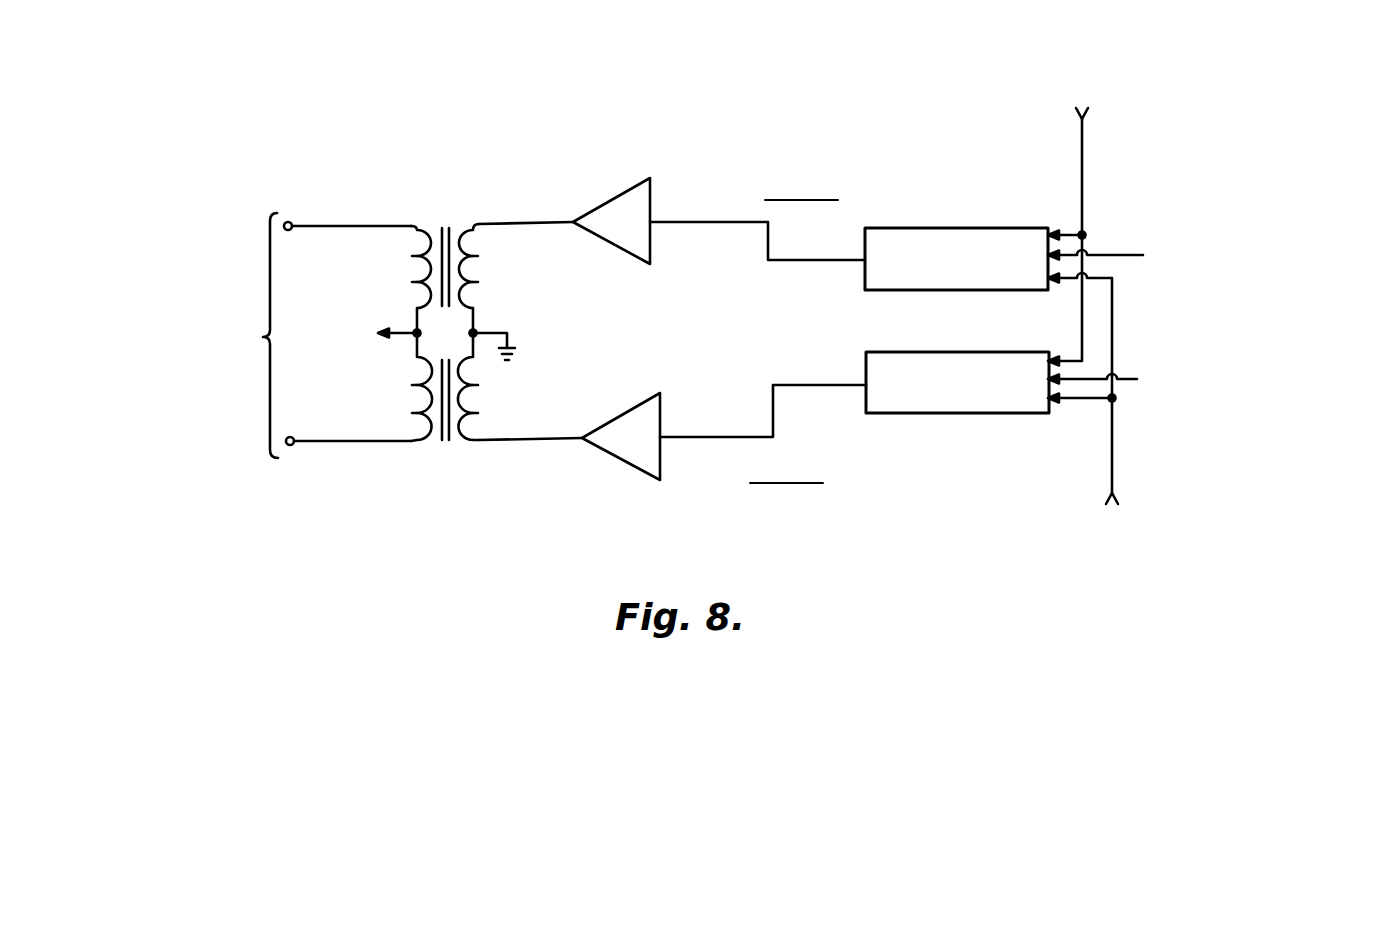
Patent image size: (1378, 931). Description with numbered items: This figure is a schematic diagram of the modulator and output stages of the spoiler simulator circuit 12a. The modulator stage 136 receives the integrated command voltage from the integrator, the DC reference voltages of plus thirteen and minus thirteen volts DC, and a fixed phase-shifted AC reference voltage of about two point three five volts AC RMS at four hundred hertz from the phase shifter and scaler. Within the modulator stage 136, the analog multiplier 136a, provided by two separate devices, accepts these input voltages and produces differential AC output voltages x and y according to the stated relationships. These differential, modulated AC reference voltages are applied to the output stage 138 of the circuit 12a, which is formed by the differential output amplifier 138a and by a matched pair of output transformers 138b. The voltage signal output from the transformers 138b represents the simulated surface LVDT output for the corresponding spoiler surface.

The spoiler simulator circuit 12a is at (845, 72).
The output stage 138 is at (243, 151).
The output transformers 138b is at (446, 208).
The differential output amplifier 138a is at (620, 255).
The modulator stage 136 is at (1234, 145).
The analog multiplier 136a is at (962, 292).